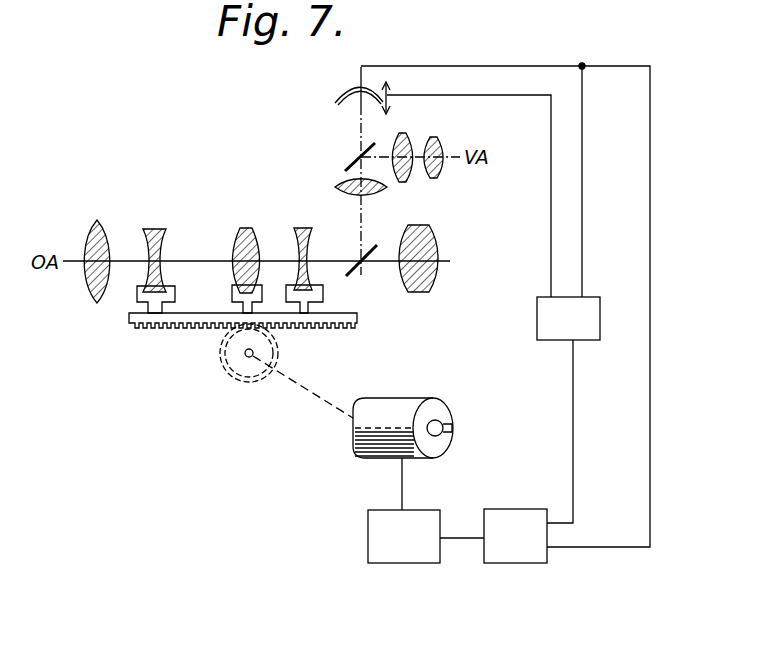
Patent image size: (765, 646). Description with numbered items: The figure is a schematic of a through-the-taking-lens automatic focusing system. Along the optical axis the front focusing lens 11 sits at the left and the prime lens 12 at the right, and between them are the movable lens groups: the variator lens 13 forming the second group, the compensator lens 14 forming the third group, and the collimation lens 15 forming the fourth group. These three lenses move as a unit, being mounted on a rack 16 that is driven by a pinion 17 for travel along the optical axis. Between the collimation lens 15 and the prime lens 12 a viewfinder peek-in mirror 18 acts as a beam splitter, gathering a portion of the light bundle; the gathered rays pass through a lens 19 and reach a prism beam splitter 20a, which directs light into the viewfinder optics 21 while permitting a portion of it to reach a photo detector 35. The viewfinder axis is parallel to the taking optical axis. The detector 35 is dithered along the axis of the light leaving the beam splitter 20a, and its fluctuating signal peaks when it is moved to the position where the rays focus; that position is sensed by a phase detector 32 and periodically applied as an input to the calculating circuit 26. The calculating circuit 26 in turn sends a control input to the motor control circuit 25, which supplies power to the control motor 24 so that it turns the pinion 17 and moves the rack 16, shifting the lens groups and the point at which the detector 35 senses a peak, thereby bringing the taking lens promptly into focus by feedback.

The front focusing lens 11 is at (98, 220).
The prime lens 12 is at (422, 212).
The variator lens 13 is at (155, 229).
The compensator lens 14 is at (246, 228).
The collimation lens 15 is at (303, 228).
The rack 16 is at (316, 329).
The pinion 17 is at (243, 381).
The viewfinder peek-in mirror 18 is at (358, 263).
The lens 19 is at (341, 183).
The prism beam splitter 20a is at (354, 153).
The viewfinder optics 21 is at (443, 130).
The control motor 24 is at (407, 397).
The motor control circuit 25 is at (412, 563).
The calculating circuit 26 is at (522, 563).
The phase detector 32 is at (600, 318).
The photo detector 35 is at (345, 91).